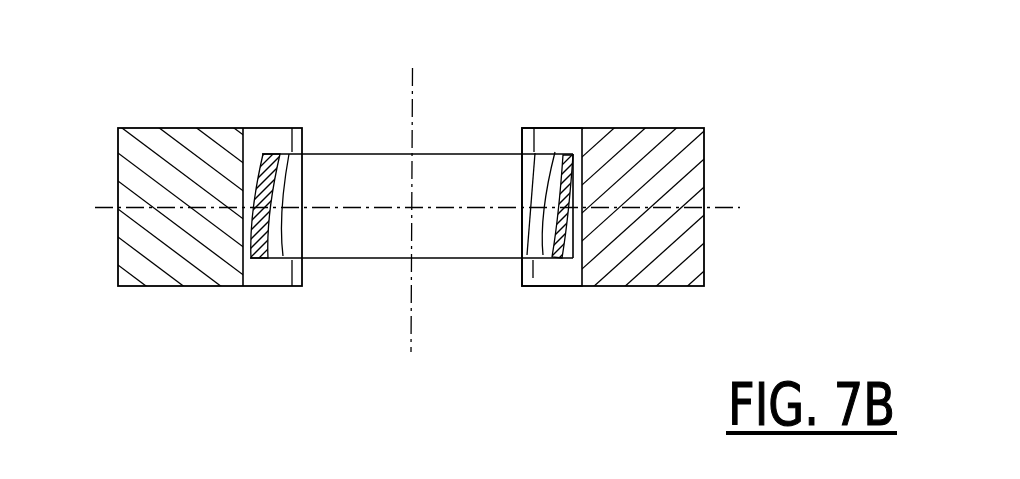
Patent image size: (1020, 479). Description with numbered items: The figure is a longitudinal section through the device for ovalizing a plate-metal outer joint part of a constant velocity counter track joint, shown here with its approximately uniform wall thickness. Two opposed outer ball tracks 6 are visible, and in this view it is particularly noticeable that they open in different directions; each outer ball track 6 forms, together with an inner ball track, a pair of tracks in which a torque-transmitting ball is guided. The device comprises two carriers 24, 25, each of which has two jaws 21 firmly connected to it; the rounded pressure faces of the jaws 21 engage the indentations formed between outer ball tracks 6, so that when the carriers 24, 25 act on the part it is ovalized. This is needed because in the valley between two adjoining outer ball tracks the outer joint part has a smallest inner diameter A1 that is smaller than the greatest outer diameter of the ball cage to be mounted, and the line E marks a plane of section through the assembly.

The outer ball track 6 is at (557, 157).
The jaw 21 is at (560, 270).
The carrier 24 is at (697, 148).
The carrier 25 is at (182, 270).
The smallest inner diameter A1 is at (413, 88).
The plane / axis line E is at (458, 179).